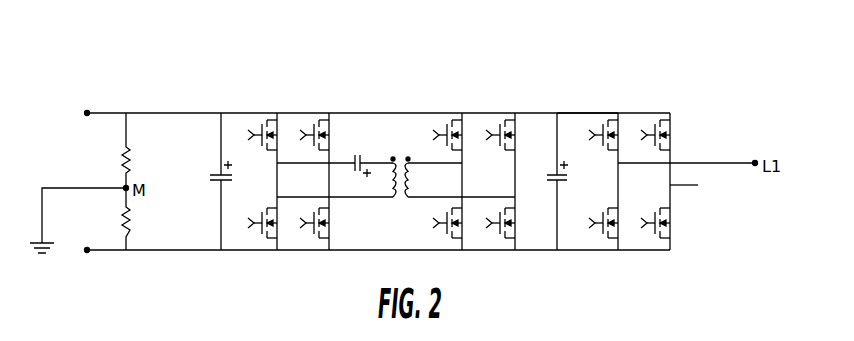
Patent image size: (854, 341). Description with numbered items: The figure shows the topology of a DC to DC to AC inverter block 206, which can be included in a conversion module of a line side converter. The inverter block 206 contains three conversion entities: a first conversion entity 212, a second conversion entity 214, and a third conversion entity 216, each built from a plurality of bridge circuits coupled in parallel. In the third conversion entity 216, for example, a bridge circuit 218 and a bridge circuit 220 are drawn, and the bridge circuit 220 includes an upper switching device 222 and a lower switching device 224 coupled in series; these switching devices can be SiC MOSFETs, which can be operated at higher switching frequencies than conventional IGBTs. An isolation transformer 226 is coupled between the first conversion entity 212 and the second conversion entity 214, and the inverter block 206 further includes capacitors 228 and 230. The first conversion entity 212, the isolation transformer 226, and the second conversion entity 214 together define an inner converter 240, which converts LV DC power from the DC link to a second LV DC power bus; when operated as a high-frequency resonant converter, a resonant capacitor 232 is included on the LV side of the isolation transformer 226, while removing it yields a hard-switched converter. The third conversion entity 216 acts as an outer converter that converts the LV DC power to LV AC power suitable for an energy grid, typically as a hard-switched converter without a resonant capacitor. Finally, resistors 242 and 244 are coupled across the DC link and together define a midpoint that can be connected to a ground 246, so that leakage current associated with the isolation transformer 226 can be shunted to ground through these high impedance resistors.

The inverter block 206 is at (180, 112).
The conversion entity 212 is at (330, 104).
The conversion entity 214 is at (523, 104).
The conversion entity 216 is at (672, 159).
The bridge circuit 218 is at (593, 166).
The bridge circuit 220 is at (672, 157).
The upper switching device 222 is at (672, 128).
The lower switching device 224 is at (672, 213).
The isolation transformer 226 is at (391, 200).
The capacitor 228 is at (212, 182).
The capacitor 230 is at (551, 182).
The resonant capacitor 232 is at (356, 157).
The inner converter 240 is at (545, 50).
The resistor 242 is at (80, 160).
The resistor 244 is at (99, 225).
The ground 246 is at (30, 259).